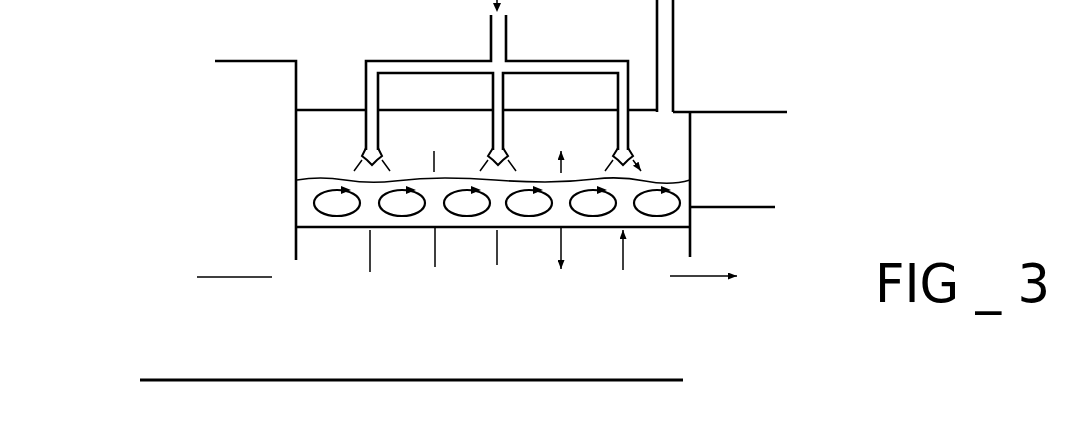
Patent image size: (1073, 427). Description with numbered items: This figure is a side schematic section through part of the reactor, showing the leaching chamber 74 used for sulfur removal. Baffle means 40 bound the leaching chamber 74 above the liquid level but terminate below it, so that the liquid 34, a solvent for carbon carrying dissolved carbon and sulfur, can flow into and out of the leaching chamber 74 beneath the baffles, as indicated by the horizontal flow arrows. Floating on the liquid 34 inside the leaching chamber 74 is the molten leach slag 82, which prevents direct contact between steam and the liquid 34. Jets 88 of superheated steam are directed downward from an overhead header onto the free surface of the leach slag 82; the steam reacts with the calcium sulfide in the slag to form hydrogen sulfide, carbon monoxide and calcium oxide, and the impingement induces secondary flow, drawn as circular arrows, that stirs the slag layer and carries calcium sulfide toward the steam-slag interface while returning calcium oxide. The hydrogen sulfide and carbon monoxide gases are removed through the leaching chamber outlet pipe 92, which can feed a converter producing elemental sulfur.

The liquid 34 is at (666, 268).
The baffle means 40 is at (692, 199).
The leaching chamber 74 is at (672, 150).
The leach slag 82 is at (498, 206).
The jets of superheated steam 88 is at (610, 150).
The leaching chamber outlet pipe 92 is at (676, 45).